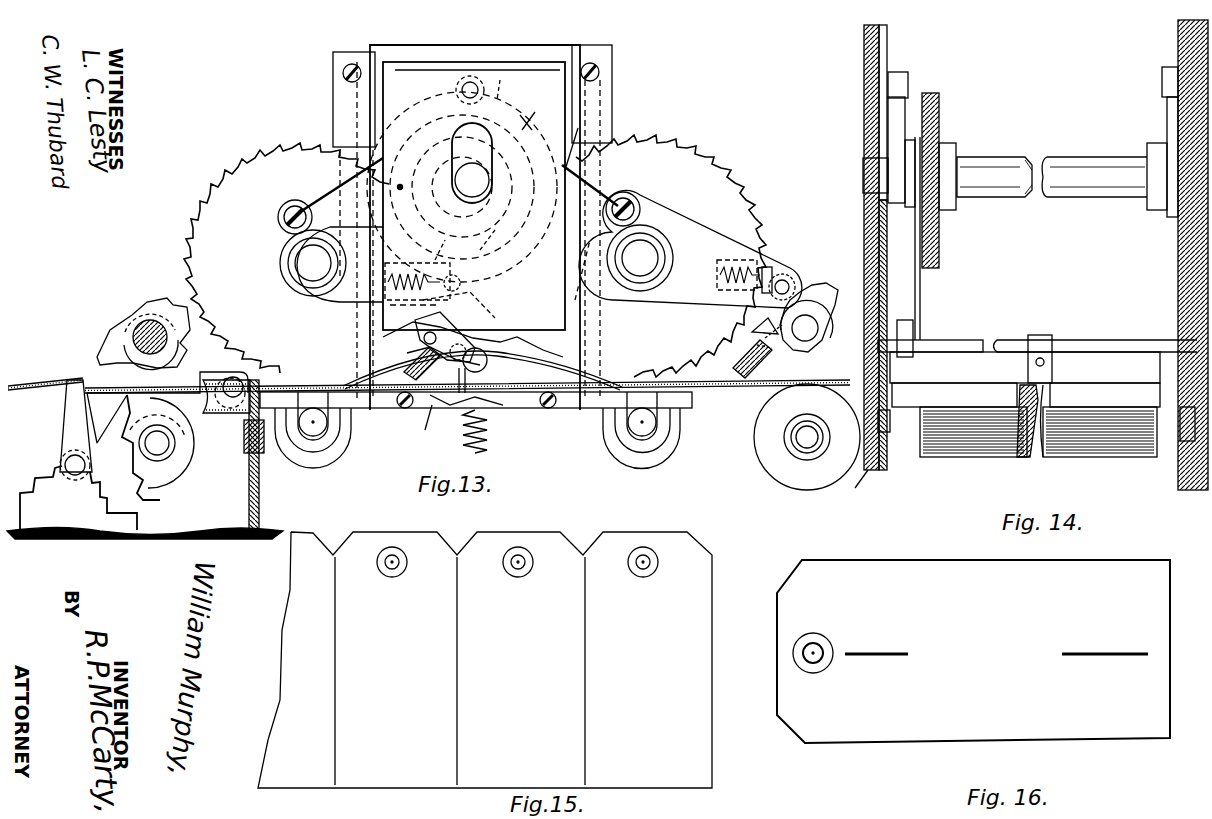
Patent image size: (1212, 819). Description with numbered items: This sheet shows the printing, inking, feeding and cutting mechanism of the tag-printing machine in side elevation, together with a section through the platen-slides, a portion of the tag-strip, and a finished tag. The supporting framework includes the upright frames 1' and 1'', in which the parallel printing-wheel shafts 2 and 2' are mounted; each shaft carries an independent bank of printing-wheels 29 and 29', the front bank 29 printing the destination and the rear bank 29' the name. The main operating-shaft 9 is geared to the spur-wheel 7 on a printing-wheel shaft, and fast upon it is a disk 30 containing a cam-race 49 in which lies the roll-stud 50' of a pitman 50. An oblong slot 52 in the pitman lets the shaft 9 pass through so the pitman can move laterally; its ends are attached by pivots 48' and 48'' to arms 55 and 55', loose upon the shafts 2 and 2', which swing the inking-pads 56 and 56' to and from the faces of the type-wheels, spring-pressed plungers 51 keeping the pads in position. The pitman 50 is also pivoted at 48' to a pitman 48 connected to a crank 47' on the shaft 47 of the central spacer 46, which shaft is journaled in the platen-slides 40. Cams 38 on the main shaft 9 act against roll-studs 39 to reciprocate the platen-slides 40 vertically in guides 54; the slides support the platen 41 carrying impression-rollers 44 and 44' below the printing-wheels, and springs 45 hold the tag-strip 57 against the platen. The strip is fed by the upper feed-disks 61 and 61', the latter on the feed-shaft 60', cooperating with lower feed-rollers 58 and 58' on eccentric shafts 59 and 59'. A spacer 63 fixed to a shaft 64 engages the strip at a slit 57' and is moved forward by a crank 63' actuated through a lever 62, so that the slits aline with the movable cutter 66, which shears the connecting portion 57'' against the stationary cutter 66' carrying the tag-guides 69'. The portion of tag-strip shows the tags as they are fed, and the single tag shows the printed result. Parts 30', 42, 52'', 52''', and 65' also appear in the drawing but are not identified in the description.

In FIG. 14, the upright frame 1' is at (1036, 255).
In FIG. 13, the upright frame 1'' is at (854, 488).
In FIG. 13, the printing-wheel shaft 2 is at (640, 258).
In FIG. 13, the printing-wheel shaft 2' is at (313, 263).
In FIG. 13, the spur-wheel 7 is at (602, 347).
In FIG. 13, the main operating-shaft 9 is at (472, 163).
In FIG. 14, the main operating-shaft 9 is at (1060, 198).
In FIG. 13, the bank of printing-wheels 29 is at (671, 256).
In FIG. 13, the bank of printing-wheels 29' is at (286, 258).
In FIG. 13, the disk 30 is at (473, 80).
In FIG. 13, the gear teeth 30' is at (459, 153).
In FIG. 13, the cams 38 is at (534, 111).
In FIG. 14, the cams 38 is at (908, 122).
In FIG. 13, the roll-studs 39 is at (462, 82).
In FIG. 14, the roll-studs 39 is at (910, 72).
In FIG. 13, the platen-slides 40 is at (470, 227).
In FIG. 14, the platen-slides 40 is at (887, 48).
In FIG. 13, the platen 41 is at (512, 410).
In FIG. 13, the spring 42 is at (463, 443).
In FIG. 13, the impression-roller 44 is at (635, 437).
In FIG. 13, the impression-roller 44' is at (325, 432).
In FIG. 13, the springs 45 is at (482, 370).
In FIG. 13, the spacer 46 is at (484, 370).
In FIG. 14, the spacer 46 is at (1028, 372).
In FIG. 13, the shaft 47 is at (464, 346).
In FIG. 14, the shaft 47 is at (1037, 332).
In FIG. 14, the crank 47' is at (934, 366).
In FIG. 13, the pitman 48 is at (588, 271).
In FIG. 14, the pitman 48 is at (934, 247).
In FIG. 13, the pivot 48' is at (607, 189).
In FIG. 14, the pivot 48' is at (849, 211).
In FIG. 13, the pivot 48'' is at (312, 196).
In FIG. 13, the cam-race 49 is at (491, 246).
In FIG. 13, the pitman 50 is at (583, 141).
In FIG. 14, the pitman 50 is at (922, 185).
In FIG. 13, the roll-stud 50' is at (343, 171).
In FIG. 13, the spring-pressed plungers 51 is at (780, 228).
In FIG. 13, the oblong slot 52 is at (462, 187).
In FIG. 13, the disk 52'' is at (511, 81).
In FIG. 14, the gear 52''' is at (959, 180).
In FIG. 13, the guides 54 is at (338, 87).
In FIG. 13, the arm 55 is at (690, 249).
In FIG. 13, the arm 55' is at (375, 277).
In FIG. 13, the inking-pad 56 is at (781, 310).
In FIG. 13, the inking-pad 56' is at (469, 367).
In FIG. 13, the strip of tags 57 is at (429, 383).
In FIG. 15, the strip of tags 57 is at (485, 660).
In FIG. 16, the strip of tags 57 is at (973, 651).
In FIG. 13, the slit 57' is at (74, 366).
In FIG. 15, the slit 57' is at (562, 700).
In FIG. 15, the connecting portion 57'' is at (617, 642).
In FIG. 13, the lower feed-roller 58 is at (807, 437).
In FIG. 13, the lower feed-roller 58' is at (163, 443).
In FIG. 13, the eccentric shaft 59 is at (807, 437).
In FIG. 13, the eccentric shaft 59' is at (157, 443).
In FIG. 13, the feed-shaft 60' is at (151, 320).
In FIG. 13, the feed-disk 61 is at (819, 307).
In FIG. 13, the feed-disk 61' is at (128, 333).
In FIG. 13, the lever 62 is at (197, 375).
In FIG. 13, the spacer 63 is at (61, 426).
In FIG. 13, the crank 63' is at (96, 462).
In FIG. 13, the shaft 64 is at (66, 458).
In FIG. 13, the roller 65' is at (176, 386).
In FIG. 13, the movable cutter 66 is at (268, 455).
In FIG. 13, the stationary cutter 66' is at (278, 503).
In FIG. 13, the tag-guides 69' is at (226, 428).